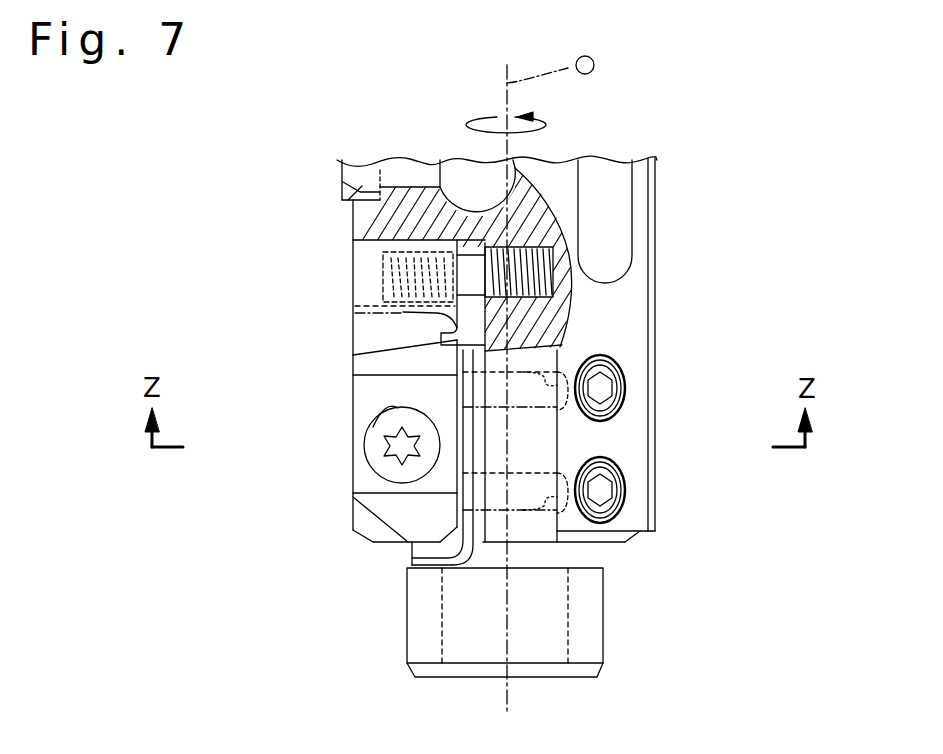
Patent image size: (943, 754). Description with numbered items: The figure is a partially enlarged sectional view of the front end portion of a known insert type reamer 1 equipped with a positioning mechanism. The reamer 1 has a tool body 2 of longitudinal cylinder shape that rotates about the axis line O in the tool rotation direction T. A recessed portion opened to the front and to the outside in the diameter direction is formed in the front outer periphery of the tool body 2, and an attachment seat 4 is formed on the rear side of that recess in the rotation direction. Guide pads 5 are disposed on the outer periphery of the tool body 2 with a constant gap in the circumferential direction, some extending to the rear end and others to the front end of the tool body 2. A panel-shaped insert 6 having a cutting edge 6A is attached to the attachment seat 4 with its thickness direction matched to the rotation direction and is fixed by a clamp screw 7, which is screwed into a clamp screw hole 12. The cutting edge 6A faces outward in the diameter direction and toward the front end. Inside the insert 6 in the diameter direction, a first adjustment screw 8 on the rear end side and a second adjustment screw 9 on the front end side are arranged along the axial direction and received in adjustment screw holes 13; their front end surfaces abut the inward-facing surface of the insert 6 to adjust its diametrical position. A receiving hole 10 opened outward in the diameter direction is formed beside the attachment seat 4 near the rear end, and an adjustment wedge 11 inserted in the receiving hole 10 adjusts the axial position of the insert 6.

The reamer 1 is at (790, 169).
The tool body 2 is at (662, 279).
The attachment seat 4 is at (258, 420).
The guide pads 5 is at (465, 178).
The insert 6 is at (305, 501).
The cutting edge 6A is at (350, 531).
The clamp screw 7 is at (372, 445).
The first adjustment screw 8 is at (603, 390).
The second adjustment screw 9 is at (603, 492).
The receiving hole 10 is at (362, 262).
The adjustment wedge 11 is at (365, 333).
The clamp screw hole 12 is at (373, 426).
The adjustment screw holes 13 is at (545, 380).